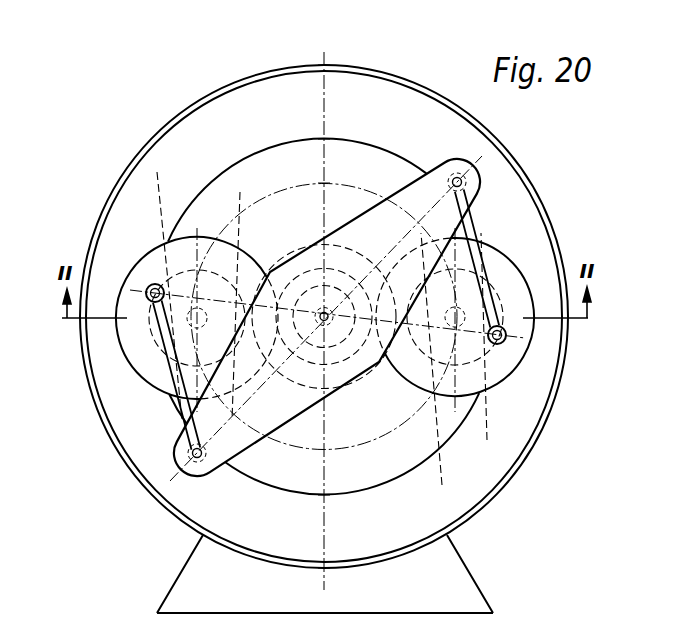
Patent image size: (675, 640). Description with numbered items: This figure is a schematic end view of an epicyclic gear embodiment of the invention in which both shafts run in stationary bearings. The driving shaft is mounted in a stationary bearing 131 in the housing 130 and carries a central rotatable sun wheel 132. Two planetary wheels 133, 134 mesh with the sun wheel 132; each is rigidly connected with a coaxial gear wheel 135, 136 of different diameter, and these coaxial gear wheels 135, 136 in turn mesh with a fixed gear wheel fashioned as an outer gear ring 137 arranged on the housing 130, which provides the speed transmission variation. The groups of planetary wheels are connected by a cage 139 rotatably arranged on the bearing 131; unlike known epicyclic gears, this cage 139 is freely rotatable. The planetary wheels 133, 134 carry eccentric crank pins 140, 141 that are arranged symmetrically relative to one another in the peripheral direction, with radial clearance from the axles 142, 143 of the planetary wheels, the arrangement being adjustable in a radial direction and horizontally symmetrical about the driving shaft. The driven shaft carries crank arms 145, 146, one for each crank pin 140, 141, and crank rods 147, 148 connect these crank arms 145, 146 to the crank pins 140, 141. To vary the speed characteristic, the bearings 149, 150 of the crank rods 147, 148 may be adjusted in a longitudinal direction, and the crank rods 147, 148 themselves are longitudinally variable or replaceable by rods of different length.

The housing 130 is at (196, 99).
The outer gear ring 137 is at (258, 127).
The planetary wheel 133 is at (152, 248).
The planetary wheel 134 is at (513, 375).
The cage 139 is at (435, 387).
The crank arm 145 is at (232, 444).
The crank arm 146 is at (413, 195).
The crank rod 147 is at (170, 372).
The crank rod 148 is at (475, 240).
The crank pin 140 is at (147, 288).
The crank pin 141 is at (503, 338).
The bearing 149 is at (191, 456).
The bearing 150 is at (462, 182).
The bearing 131 is at (323, 321).
The sun wheel 132 is at (297, 253).
The coaxial gear wheel 135 is at (324, 308).
The axle 142 is at (164, 284).
The coaxial gear wheel 136 is at (438, 370).
The axle 143 is at (497, 346).